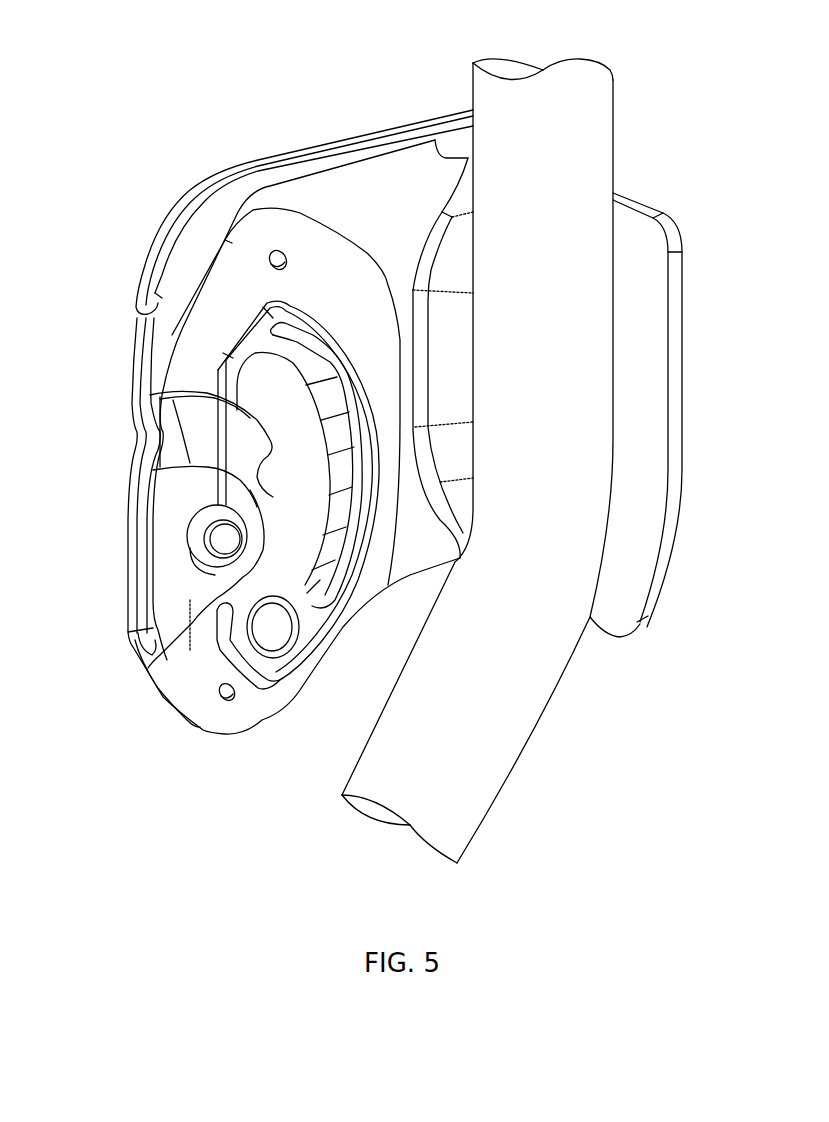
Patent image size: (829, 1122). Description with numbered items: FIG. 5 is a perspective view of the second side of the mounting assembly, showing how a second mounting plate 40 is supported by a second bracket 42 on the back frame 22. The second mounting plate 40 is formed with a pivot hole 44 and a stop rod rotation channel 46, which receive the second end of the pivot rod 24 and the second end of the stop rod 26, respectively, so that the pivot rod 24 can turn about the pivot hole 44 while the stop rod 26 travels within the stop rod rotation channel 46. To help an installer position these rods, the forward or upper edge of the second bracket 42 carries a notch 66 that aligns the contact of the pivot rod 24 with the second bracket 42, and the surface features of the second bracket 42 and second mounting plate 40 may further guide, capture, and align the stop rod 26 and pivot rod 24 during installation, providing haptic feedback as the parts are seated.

The back frame 22 is at (524, 187).
The pivot rod 24 is at (200, 528).
The stop rod 26 is at (273, 640).
The second mounting plate 40 is at (240, 260).
The second bracket 42 is at (362, 183).
The pivot hole 44 is at (205, 552).
The stop rod rotation channel 46 is at (320, 594).
The notch 66 is at (258, 500).